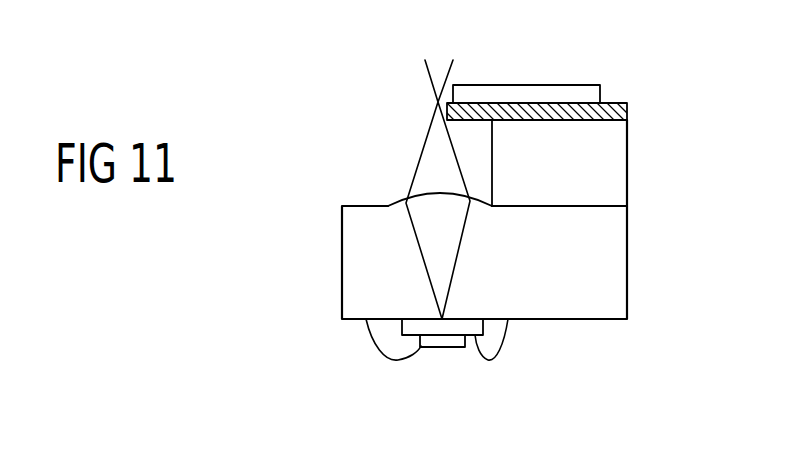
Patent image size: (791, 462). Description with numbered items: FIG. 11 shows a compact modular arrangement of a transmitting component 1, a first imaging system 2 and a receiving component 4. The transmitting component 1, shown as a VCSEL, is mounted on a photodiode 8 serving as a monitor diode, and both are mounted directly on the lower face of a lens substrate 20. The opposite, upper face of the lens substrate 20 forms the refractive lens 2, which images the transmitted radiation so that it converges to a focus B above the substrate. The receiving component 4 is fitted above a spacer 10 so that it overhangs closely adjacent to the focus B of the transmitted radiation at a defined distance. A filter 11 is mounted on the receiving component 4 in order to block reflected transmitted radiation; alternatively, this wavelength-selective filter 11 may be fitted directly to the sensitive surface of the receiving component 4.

The transmitting component 1 is at (467, 325).
The first imaging system 2 is at (433, 204).
The receiving component 4 is at (625, 102).
The photodiode 8 is at (447, 340).
The spacer 10 is at (602, 173).
The filter 11 is at (561, 96).
The lens substrate 20 is at (608, 270).
The focus B is at (438, 102).